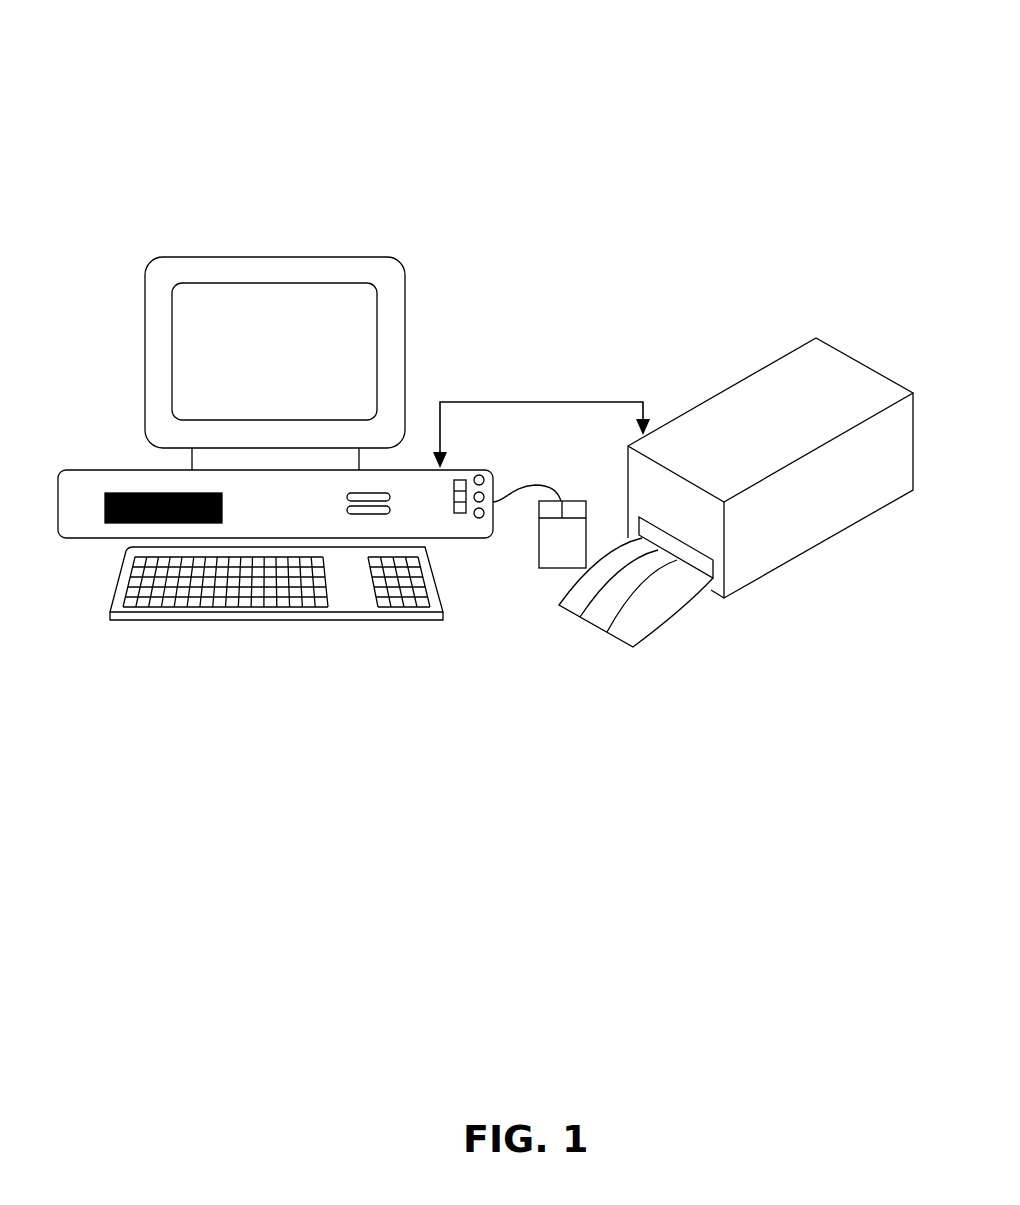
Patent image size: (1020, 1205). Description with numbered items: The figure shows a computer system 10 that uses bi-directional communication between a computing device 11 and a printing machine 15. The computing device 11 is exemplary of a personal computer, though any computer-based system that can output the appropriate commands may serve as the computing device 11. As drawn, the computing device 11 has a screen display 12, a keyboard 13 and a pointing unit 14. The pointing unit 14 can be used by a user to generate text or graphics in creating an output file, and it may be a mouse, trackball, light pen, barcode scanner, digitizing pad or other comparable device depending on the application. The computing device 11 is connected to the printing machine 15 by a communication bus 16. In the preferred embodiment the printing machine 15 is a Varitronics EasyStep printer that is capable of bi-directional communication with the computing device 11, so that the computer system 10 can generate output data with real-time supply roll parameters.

The computer system 10 is at (589, 136).
The computing device 11 is at (273, 235).
The screen display 12 is at (363, 342).
The keyboard 13 is at (213, 582).
The pointing unit 14 is at (553, 545).
The printing machine 15 is at (763, 355).
The communication bus 16 is at (532, 402).